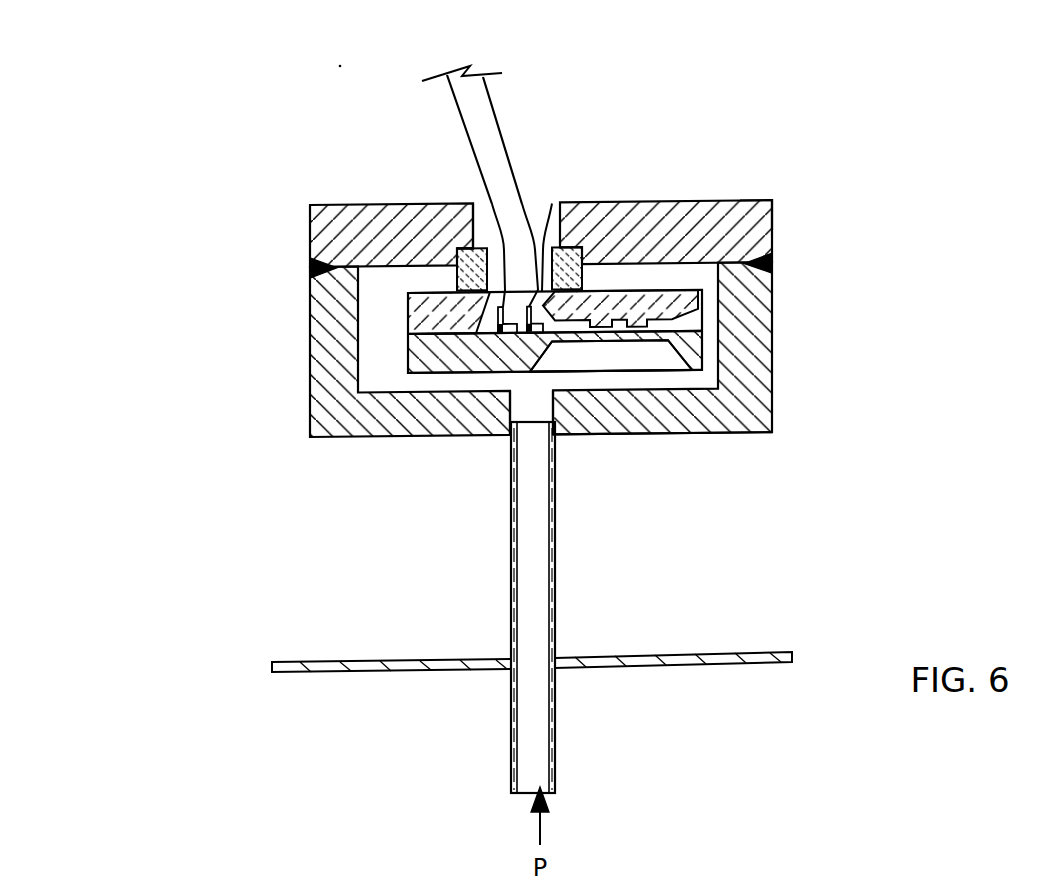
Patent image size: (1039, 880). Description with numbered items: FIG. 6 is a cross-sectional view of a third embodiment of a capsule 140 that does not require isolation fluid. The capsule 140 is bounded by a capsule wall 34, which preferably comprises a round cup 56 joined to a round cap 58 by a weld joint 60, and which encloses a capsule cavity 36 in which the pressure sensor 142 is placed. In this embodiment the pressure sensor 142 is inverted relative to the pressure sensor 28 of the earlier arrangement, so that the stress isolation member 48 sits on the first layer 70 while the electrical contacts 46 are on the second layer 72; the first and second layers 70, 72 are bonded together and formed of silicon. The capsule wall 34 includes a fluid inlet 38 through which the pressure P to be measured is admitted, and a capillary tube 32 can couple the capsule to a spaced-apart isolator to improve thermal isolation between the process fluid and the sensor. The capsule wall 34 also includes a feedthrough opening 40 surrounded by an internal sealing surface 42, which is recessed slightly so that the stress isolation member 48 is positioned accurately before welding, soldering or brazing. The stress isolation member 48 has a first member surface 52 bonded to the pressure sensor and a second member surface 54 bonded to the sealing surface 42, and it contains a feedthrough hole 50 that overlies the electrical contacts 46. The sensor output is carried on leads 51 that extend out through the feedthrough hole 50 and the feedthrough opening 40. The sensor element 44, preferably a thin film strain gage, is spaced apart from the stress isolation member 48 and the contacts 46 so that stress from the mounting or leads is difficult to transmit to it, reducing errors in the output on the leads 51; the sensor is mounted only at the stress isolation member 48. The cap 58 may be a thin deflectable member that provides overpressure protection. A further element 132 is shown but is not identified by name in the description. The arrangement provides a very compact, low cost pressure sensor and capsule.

The pressure sensor 28 is at (738, 422).
The capillary tube 32 is at (556, 510).
The capsule wall 34 is at (308, 232).
The capsule cavity 36 is at (376, 379).
The fluid inlet 38 is at (508, 400).
The feedthrough opening 40 is at (538, 204).
The internal sealing surface 42 is at (468, 250).
The sensor element 44 is at (648, 372).
The electrical contacts 46 is at (500, 334).
The stress isolation member 48 is at (463, 257).
The feedthrough hole 50 is at (552, 204).
The leads 51 is at (497, 112).
The first member surface 52 is at (503, 334).
The second member surface 54 is at (571, 246).
The round cup 56 is at (745, 345).
The round cap 58 is at (705, 226).
The weld joint 60 is at (773, 262).
The first layer 70 is at (703, 299).
The second layer 72 is at (690, 363).
The mounting plate 132 is at (625, 656).
The capsule 140 is at (837, 450).
The pressure sensor 142 is at (762, 202).